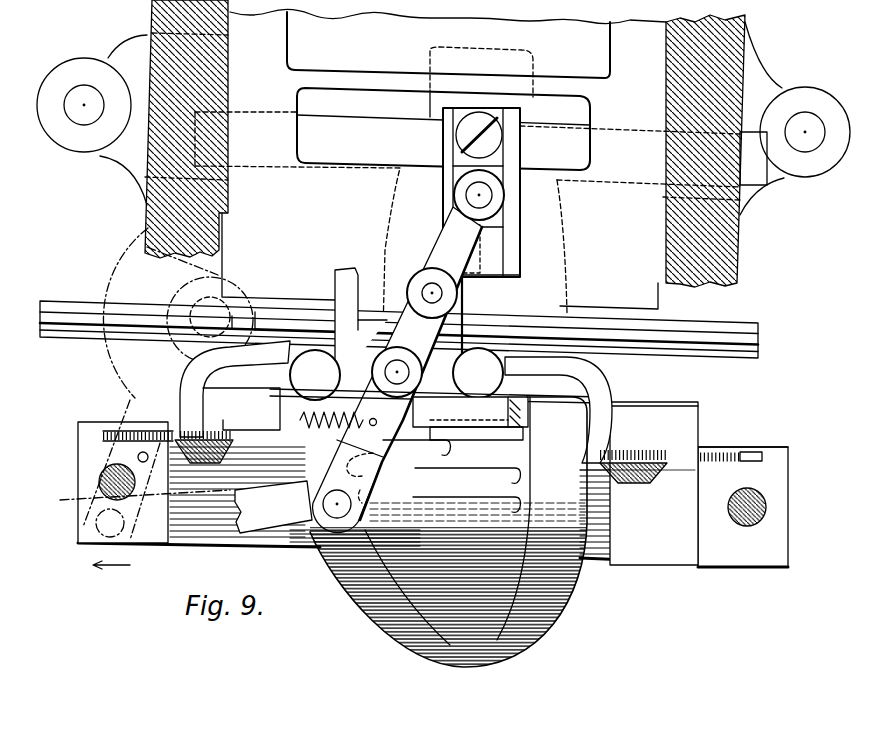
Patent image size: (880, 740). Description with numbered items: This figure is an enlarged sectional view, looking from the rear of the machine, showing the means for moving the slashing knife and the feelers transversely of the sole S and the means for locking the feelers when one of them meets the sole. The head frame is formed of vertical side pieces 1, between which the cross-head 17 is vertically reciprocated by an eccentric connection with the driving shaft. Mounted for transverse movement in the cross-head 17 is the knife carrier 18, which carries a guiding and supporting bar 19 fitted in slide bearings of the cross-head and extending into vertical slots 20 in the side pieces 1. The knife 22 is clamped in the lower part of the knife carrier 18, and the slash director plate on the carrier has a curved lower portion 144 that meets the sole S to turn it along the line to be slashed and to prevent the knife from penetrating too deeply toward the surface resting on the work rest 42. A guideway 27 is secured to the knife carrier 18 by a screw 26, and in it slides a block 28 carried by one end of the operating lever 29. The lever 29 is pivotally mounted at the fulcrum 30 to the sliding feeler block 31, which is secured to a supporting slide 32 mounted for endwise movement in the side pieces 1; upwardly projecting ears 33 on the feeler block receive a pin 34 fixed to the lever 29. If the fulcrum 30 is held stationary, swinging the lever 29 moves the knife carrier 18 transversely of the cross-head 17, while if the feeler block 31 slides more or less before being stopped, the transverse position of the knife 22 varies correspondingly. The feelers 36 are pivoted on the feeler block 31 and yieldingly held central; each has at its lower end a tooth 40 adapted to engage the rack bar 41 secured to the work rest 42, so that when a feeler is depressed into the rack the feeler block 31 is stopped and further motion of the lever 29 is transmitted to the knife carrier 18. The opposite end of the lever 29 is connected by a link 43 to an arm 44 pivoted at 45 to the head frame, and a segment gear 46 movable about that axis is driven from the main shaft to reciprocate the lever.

The side pieces 1 is at (144, 211).
The cross-head 17 is at (655, 293).
The knife carrier 18 is at (563, 250).
The guiding and supporting bar 19 is at (757, 193).
The vertical slots 20 is at (147, 43).
The knife 22 is at (528, 427).
The screw 26 is at (497, 136).
The guideway 27 is at (507, 202).
The block 28 is at (453, 173).
The operating lever 29 is at (434, 252).
The pivot 30 is at (391, 367).
The sliding feeler block 31 is at (340, 357).
The supporting slide 32 is at (672, 343).
The ears 33 is at (340, 272).
The pin 34 is at (422, 290).
The feelers 36 is at (250, 380).
The tooth 40 is at (173, 422).
The rack bar 41 is at (738, 452).
The work rest 42 is at (662, 527).
The link 43 is at (277, 527).
The arm 44 is at (85, 500).
The pivot 45 is at (268, 268).
The segment gear 46 is at (120, 280).
The curved lower portion 144 is at (485, 417).
The sole S is at (553, 563).